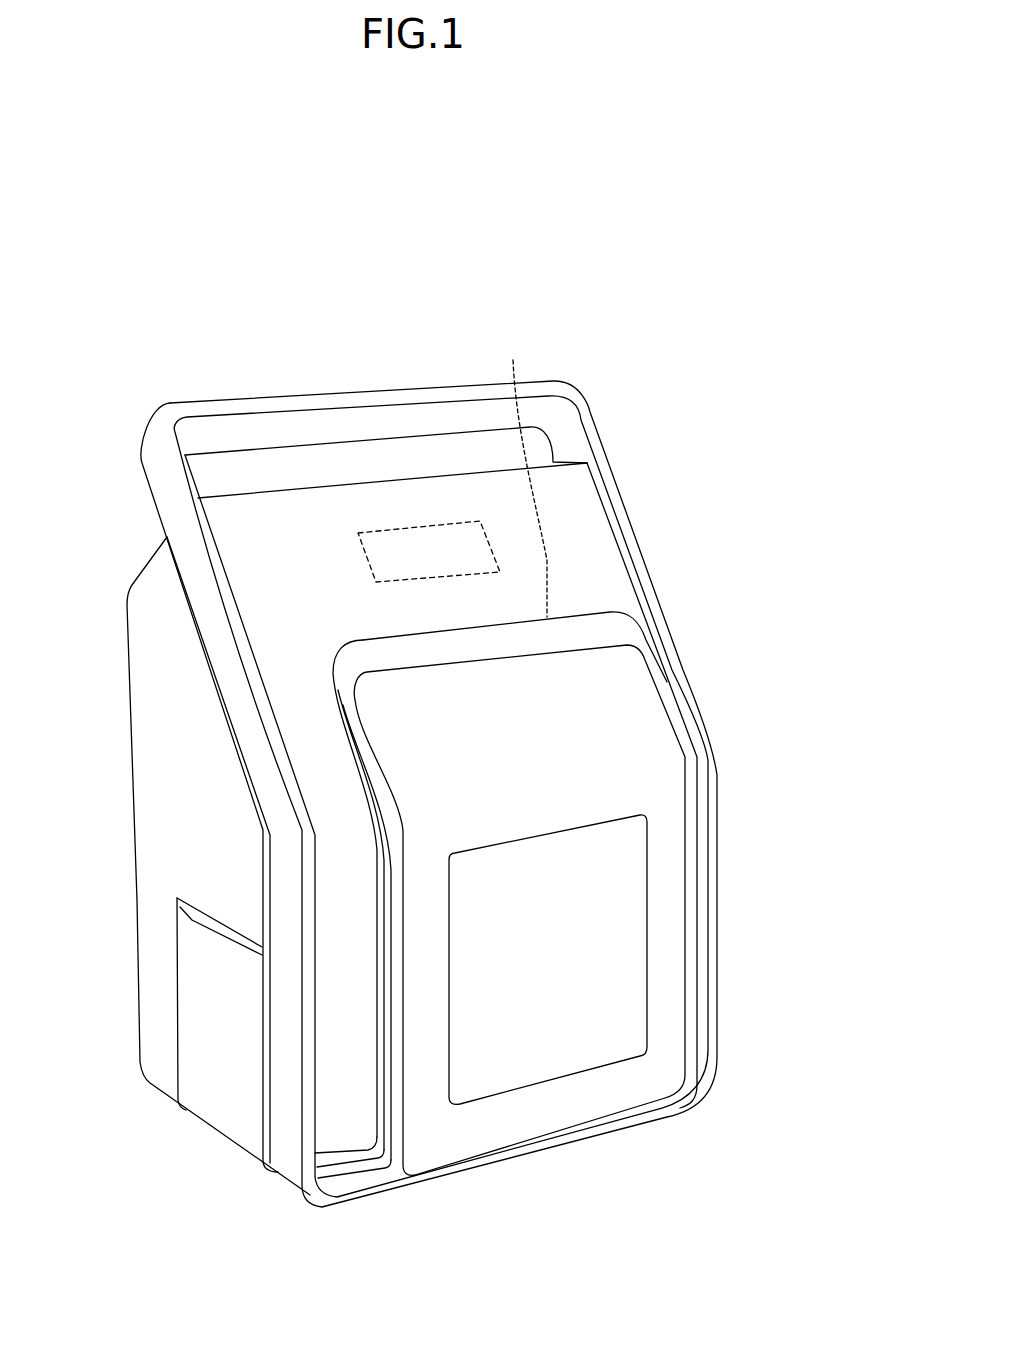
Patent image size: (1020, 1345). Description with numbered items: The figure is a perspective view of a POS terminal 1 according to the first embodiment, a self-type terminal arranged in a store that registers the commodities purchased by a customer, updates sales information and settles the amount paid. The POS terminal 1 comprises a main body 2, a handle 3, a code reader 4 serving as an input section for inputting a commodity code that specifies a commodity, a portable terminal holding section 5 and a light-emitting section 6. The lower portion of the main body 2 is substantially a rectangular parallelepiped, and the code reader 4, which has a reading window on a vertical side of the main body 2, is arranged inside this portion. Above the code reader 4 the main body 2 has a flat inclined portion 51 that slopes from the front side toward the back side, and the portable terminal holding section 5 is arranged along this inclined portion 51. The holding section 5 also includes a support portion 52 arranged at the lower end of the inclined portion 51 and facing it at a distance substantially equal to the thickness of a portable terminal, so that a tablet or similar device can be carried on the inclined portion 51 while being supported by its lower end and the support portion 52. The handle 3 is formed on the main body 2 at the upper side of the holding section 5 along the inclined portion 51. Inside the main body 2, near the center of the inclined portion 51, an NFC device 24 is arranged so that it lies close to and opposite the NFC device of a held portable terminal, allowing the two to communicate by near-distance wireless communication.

The POS terminal 1 is at (614, 299).
The main body 2 is at (155, 793).
The handle 3 is at (410, 386).
The code reader 4 is at (628, 937).
The portable terminal holding section 5 is at (578, 547).
The light-emitting section 6 is at (635, 633).
The NFC device 24 is at (377, 523).
The inclined portion 51 is at (590, 497).
The support portion 52 is at (513, 360).